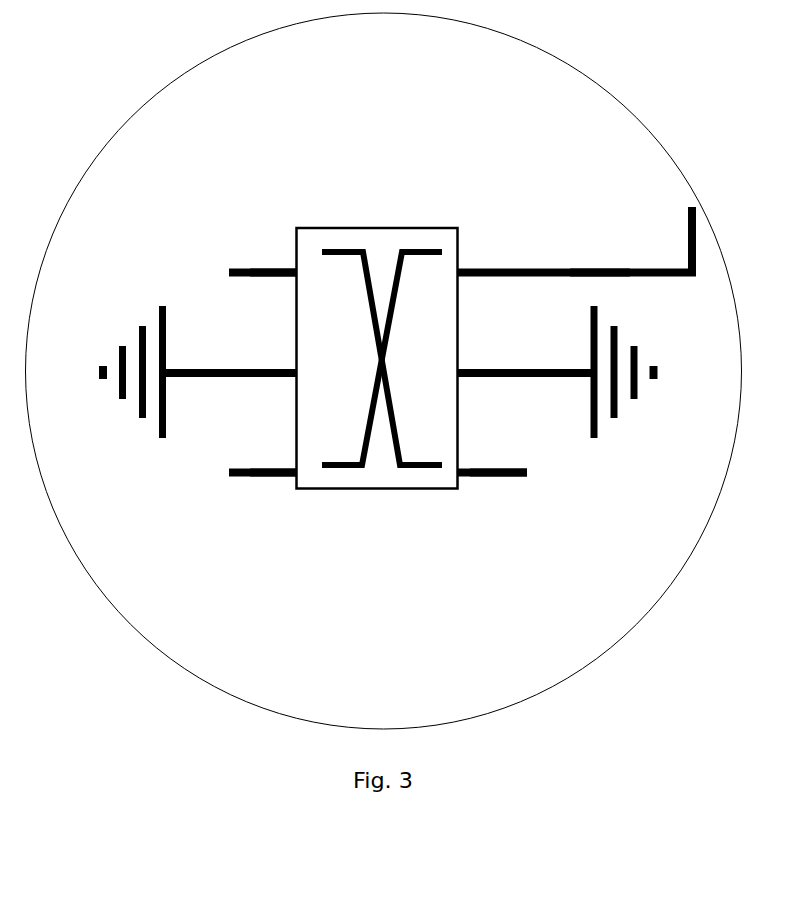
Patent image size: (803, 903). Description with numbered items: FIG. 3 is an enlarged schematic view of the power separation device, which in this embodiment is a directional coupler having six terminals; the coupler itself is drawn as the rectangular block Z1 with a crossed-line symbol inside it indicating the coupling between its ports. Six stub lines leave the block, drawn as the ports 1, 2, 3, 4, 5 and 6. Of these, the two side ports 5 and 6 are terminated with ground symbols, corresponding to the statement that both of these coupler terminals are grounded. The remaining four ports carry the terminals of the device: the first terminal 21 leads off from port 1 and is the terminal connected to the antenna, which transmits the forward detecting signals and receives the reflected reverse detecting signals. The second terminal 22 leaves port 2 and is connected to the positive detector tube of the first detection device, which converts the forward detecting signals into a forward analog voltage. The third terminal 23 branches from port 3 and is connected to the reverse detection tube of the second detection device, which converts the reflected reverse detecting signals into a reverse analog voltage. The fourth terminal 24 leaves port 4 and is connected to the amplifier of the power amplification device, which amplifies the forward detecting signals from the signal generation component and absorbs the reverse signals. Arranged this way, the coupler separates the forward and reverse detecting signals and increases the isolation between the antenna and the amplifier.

The first shaft 1 is at (246, 242).
The second shaft 2 is at (255, 447).
The third shaft 3 is at (574, 240).
The fourth shaft 4 is at (501, 447).
The fifth shaft (fixed to housing) 5 is at (555, 372).
The sixth shaft (fixed to housing) 6 is at (200, 372).
The first terminal 21 is at (265, 267).
The second terminal 22 is at (268, 477).
The third terminal 23 is at (597, 268).
The fourth terminal 24 is at (502, 475).
The gear set Z1 is at (377, 331).